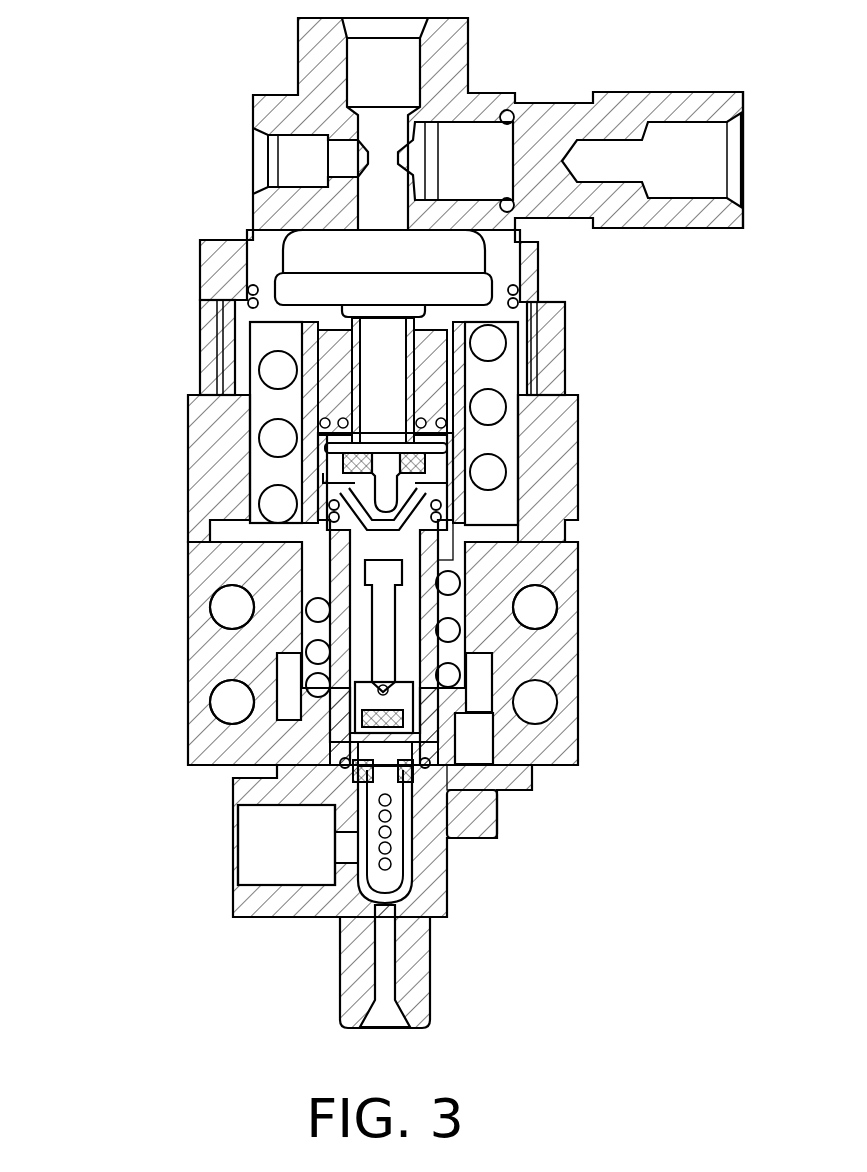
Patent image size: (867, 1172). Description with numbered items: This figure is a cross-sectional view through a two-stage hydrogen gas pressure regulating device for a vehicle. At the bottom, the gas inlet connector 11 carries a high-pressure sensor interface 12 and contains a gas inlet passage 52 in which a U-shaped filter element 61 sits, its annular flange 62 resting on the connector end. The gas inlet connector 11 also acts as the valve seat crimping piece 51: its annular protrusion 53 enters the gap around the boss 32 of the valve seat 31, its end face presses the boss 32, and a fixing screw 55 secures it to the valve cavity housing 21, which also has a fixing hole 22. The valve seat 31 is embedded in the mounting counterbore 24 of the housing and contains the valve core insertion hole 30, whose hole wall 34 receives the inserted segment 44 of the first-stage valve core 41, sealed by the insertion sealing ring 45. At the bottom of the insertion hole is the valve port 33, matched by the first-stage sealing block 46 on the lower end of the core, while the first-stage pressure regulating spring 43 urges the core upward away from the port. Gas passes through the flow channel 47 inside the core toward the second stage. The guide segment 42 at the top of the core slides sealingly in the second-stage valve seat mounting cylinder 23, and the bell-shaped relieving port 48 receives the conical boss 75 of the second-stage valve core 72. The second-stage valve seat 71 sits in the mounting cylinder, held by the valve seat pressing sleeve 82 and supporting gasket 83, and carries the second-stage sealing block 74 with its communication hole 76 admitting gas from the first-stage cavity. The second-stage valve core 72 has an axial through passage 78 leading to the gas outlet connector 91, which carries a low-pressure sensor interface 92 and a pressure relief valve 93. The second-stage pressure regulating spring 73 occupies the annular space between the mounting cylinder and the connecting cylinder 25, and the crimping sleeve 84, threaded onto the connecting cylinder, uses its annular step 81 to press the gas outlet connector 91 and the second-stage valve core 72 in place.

The gas inlet connector 11 is at (433, 883).
The high-pressure sensor interface 12 is at (262, 855).
The valve cavity housing 21 is at (563, 665).
The fixing hole 22 is at (550, 615).
The second-stage valve seat mounting cylinder 23 is at (335, 452).
The mounting counterbore 24 is at (425, 728).
The connecting cylinder 25 is at (535, 448).
The valve core insertion hole 30 is at (400, 723).
The valve seat 31 is at (340, 760).
The boss 32 is at (353, 730).
The valve port 33 is at (337, 840).
The hole wall 34 is at (340, 707).
The first-stage valve core 41 is at (470, 590).
The guide segment 42 is at (325, 536).
The first-stage pressure regulating spring 43 is at (235, 625).
The inserted segment 44 is at (318, 612).
The insertion sealing ring 45 is at (305, 665).
The first-stage sealing block 46 is at (488, 777).
The flow channel 47 is at (362, 598).
The relieving port 48 is at (450, 524).
The valve seat crimping piece 51 is at (470, 758).
The gas inlet passage 52 is at (400, 902).
The annular protrusion 53 is at (468, 762).
The fixing screw 55 is at (490, 778).
The filter element 61 is at (367, 890).
The annular flange 62 is at (355, 775).
The second-stage valve seat 71 is at (332, 462).
The second-stage valve core 72 is at (245, 312).
The second-stage pressure regulating spring 73 is at (265, 497).
The second-stage sealing block 74 is at (447, 470).
The conical boss 75 is at (445, 503).
The communication hole 76 is at (447, 483).
The axial through passage 78 is at (392, 387).
The annular step 81 is at (545, 300).
The valve seat pressing sleeve 82 is at (432, 403).
The supporting gasket 83 is at (285, 415).
The crimping sleeve 84 is at (200, 425).
The gas outlet connector 91 is at (313, 66).
The low-pressure sensor interface 92 is at (290, 160).
The pressure relief valve 93 is at (672, 140).